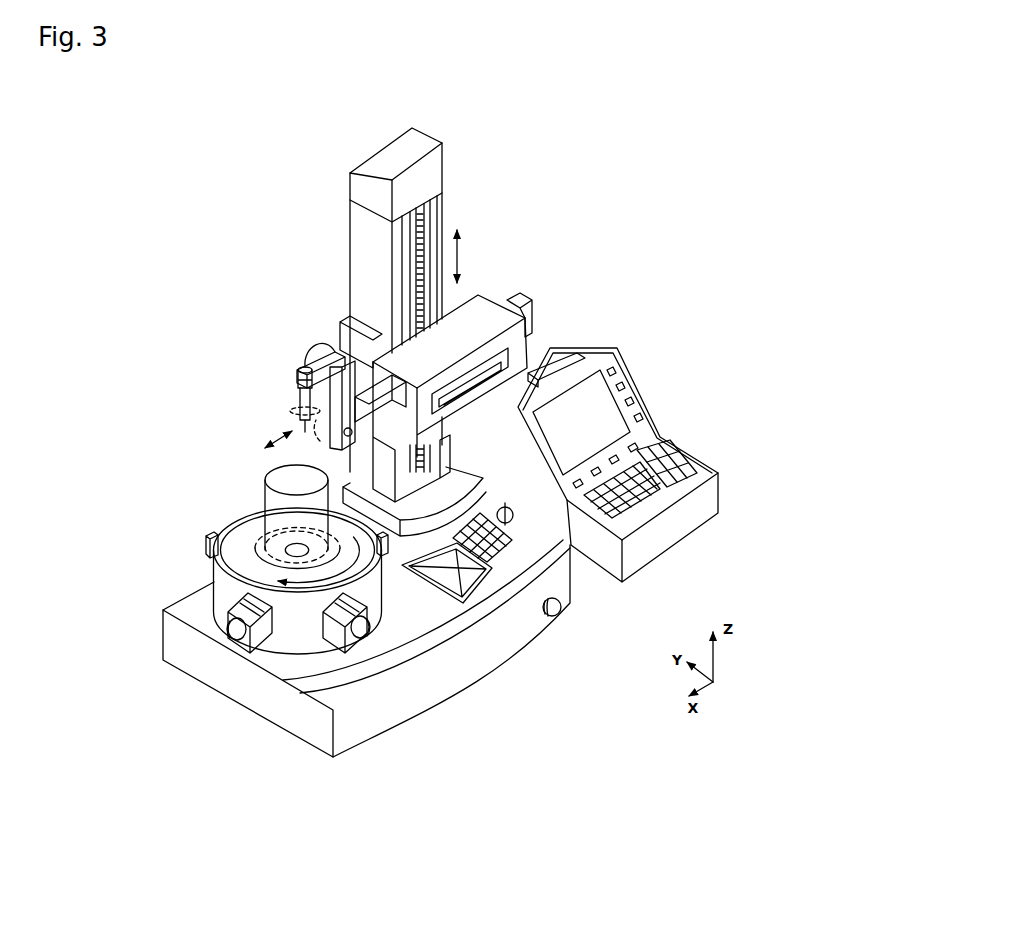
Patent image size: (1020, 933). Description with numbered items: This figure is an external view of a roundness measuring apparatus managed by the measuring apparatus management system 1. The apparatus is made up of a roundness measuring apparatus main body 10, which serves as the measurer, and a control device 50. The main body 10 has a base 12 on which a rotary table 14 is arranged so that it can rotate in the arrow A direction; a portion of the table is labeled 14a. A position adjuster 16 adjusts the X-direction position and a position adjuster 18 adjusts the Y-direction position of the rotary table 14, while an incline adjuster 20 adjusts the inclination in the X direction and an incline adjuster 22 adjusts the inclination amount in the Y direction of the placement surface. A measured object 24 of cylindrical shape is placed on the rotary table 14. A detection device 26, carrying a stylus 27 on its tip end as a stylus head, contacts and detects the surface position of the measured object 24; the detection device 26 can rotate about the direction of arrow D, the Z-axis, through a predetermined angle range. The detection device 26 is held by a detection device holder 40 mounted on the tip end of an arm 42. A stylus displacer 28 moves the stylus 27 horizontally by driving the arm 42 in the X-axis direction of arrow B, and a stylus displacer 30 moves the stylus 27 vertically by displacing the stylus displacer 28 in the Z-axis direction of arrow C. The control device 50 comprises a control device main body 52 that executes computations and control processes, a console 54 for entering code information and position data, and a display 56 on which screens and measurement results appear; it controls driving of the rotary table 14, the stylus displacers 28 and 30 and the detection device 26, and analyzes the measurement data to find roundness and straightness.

The measuring apparatus management system 1 is at (661, 190).
The roundness measuring apparatus main body 10 is at (186, 378).
The base 12 is at (382, 723).
The rotary table 14 is at (227, 583).
The table mounting surface 14a is at (254, 531).
The position adjuster 16 is at (383, 560).
The position adjuster 18 is at (206, 538).
The incline adjuster 20 is at (233, 639).
The incline adjuster 22 is at (371, 633).
The measured object 24 is at (265, 465).
The detection device 26 is at (295, 375).
The stylus 27 is at (299, 405).
The stylus displacer 28 is at (480, 294).
The stylus displacer 30 is at (360, 252).
The detection device holder 40 is at (335, 354).
The arm 42 is at (380, 418).
The control device 50 is at (768, 368).
The control device main body 52 is at (723, 500).
The console 54 is at (690, 453).
The display 56 is at (650, 405).